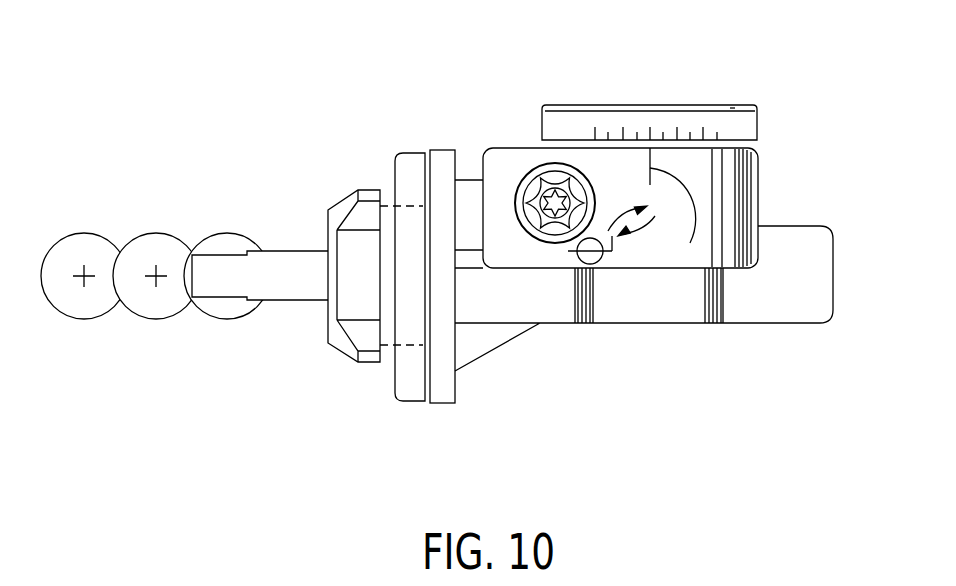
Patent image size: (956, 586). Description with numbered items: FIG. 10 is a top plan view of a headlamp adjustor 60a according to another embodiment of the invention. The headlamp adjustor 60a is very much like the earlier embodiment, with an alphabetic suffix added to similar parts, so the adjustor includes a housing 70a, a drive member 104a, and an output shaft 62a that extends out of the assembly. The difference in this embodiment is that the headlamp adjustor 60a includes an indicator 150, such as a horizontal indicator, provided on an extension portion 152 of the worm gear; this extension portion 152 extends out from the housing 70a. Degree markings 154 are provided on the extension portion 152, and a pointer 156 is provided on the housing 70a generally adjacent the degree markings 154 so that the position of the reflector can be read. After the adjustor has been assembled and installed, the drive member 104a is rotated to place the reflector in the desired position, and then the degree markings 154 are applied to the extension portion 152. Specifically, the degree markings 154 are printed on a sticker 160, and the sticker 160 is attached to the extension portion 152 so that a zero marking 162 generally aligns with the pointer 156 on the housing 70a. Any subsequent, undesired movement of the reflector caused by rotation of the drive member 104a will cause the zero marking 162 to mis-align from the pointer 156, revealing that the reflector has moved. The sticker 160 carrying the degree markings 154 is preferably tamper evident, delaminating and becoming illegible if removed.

The headlamp adjustor 60a is at (710, 382).
The adjustable shaft with ball joints 62a is at (287, 310).
The housing 70a is at (547, 340).
The drive member 104a is at (531, 257).
The indicator 150 is at (771, 128).
The extension portion 152 is at (760, 117).
The degree markings 154 is at (566, 130).
The pointer 156 is at (690, 245).
The sticker 160 is at (729, 97).
The zero marking 162 is at (652, 124).